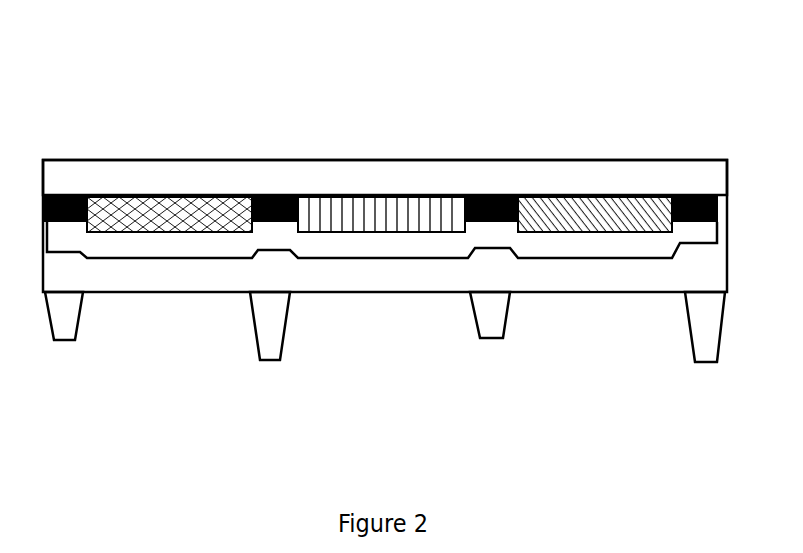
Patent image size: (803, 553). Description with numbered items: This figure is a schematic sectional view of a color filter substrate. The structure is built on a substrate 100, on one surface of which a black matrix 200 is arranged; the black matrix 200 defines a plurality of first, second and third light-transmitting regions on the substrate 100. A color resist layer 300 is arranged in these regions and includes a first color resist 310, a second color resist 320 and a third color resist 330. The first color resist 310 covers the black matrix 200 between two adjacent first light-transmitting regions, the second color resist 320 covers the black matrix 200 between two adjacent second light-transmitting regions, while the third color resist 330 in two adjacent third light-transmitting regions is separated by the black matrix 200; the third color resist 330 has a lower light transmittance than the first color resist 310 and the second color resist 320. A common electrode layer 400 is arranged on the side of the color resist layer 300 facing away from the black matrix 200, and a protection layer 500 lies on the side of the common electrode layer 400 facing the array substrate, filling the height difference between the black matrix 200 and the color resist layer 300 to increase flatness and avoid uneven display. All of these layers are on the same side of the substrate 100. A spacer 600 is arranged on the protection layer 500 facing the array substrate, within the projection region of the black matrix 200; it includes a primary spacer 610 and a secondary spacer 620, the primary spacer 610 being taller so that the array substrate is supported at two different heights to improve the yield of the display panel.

The substrate 100 is at (68, 160).
The black matrix 200 is at (685, 193).
The color resist layer 300 is at (379, 126).
The first color resist 310 is at (243, 222).
The second color resist 320 is at (380, 212).
The third color resist 330 is at (543, 213).
The common electrode layer 400 is at (148, 253).
The protection layer 500 is at (605, 282).
The spacer 600 is at (385, 379).
The primary spacer 610 is at (275, 320).
The secondary spacer 620 is at (488, 322).